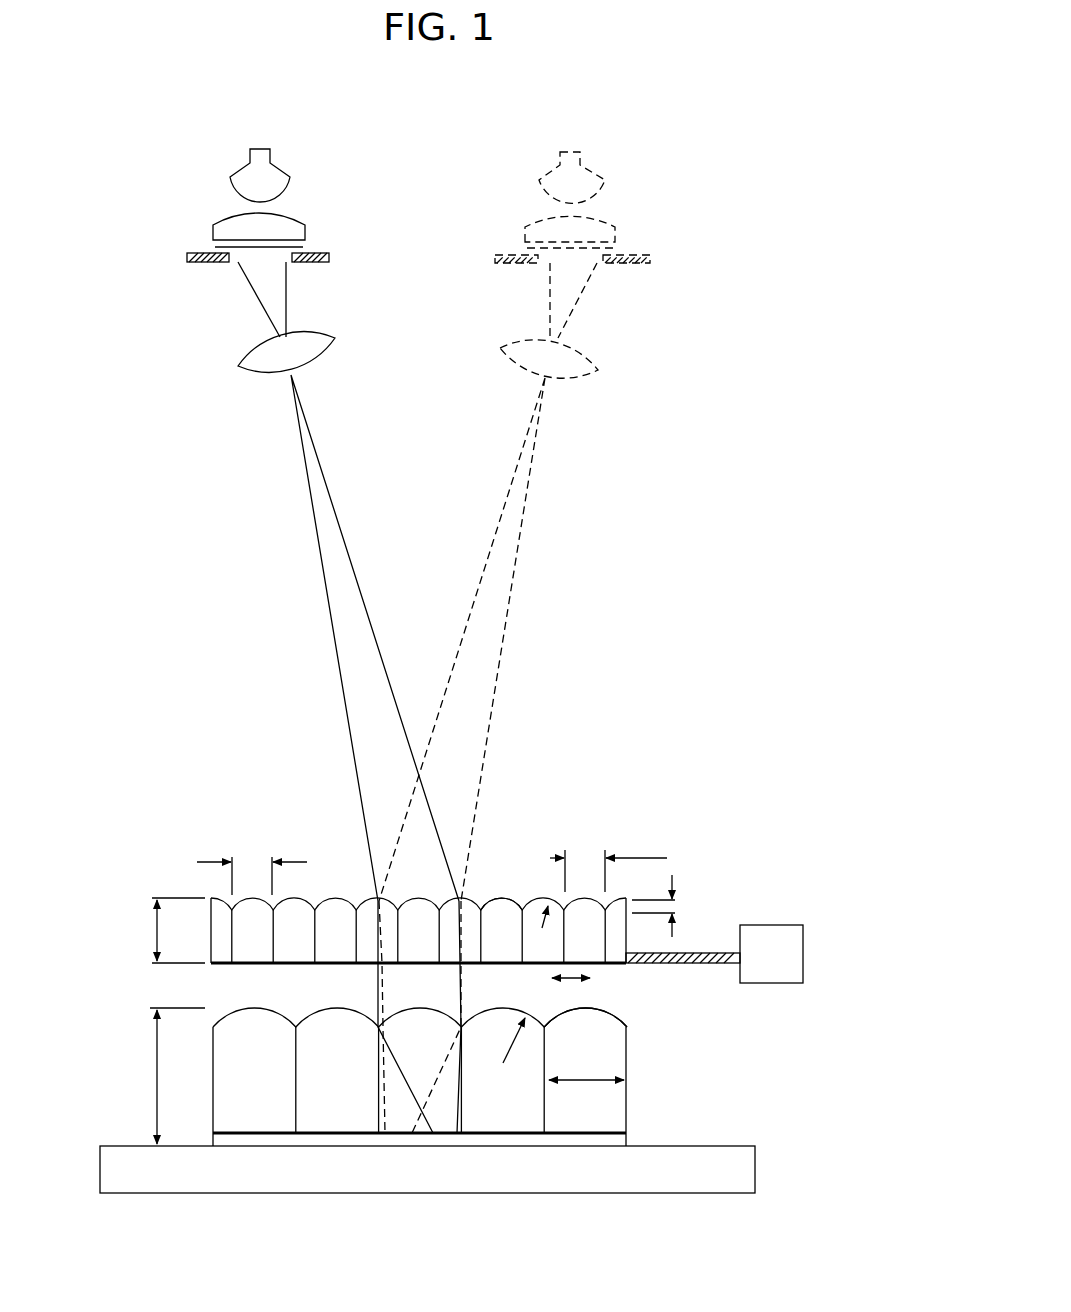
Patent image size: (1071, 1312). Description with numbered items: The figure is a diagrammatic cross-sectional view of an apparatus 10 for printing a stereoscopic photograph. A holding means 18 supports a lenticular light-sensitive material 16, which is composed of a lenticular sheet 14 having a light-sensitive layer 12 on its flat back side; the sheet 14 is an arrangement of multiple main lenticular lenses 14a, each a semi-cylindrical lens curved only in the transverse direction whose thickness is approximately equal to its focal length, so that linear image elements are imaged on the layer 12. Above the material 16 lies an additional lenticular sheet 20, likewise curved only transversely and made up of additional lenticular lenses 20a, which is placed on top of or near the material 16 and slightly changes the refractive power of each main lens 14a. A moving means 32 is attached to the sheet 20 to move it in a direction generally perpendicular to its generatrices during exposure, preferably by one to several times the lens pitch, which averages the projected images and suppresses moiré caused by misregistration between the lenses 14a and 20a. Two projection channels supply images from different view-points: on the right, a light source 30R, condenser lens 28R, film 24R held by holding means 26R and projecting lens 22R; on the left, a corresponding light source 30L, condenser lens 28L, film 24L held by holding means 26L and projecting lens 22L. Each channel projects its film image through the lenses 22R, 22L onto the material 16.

The apparatus for printing a stereoscopic photograph 10 is at (765, 180).
The light source 30R is at (272, 180).
The condenser lens 28R is at (293, 227).
The holding means 26R is at (200, 262).
The film 24R is at (263, 262).
The projecting lens 22R is at (317, 342).
The light source 30L is at (595, 173).
The condenser lens 28L is at (600, 217).
The holding means 26L is at (633, 263).
The film 24L is at (570, 263).
The projecting lens 22L is at (580, 373).
The additional lenticular sheet 20 is at (503, 876).
The additional lenticular lens 20a is at (507, 905).
The moving means 32 is at (783, 932).
The lenticular light-sensitive material 16 is at (478, 1084).
The lenticular sheet 14 is at (470, 1060).
The main lenticular lens 14a is at (598, 1023).
The light-sensitive layer 12 is at (622, 1142).
The holding means 18 is at (747, 1177).